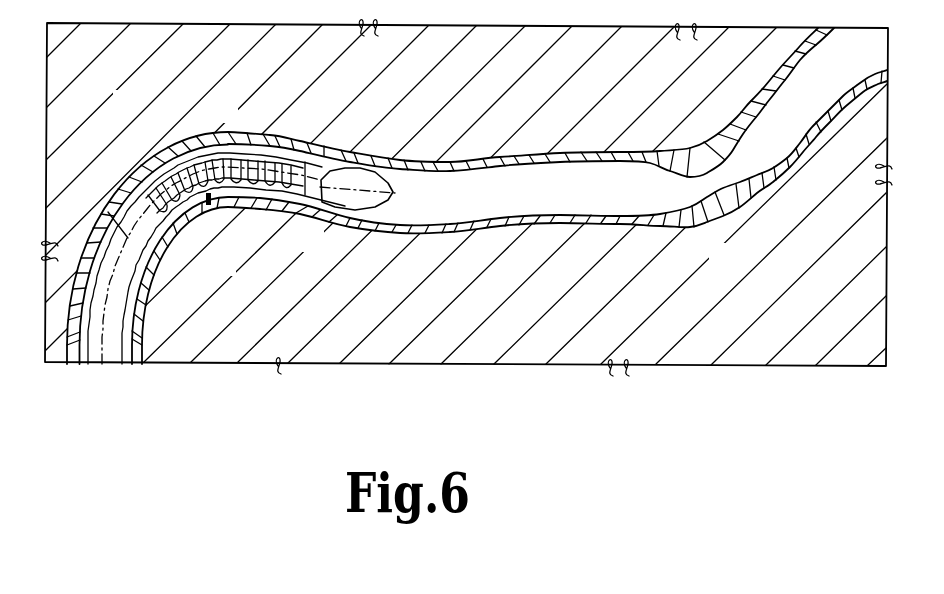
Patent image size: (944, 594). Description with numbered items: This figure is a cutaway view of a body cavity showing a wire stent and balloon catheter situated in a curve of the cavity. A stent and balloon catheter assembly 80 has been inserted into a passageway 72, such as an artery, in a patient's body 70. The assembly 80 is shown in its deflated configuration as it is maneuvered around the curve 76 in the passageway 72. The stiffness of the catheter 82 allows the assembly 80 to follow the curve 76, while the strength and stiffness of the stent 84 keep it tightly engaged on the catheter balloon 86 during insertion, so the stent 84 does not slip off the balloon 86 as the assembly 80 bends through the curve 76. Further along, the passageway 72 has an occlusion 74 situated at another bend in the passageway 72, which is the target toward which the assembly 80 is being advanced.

The patient's body 70 is at (571, 47).
The passageway 72 is at (313, 140).
The occlusion 74 is at (710, 221).
The curve 76 is at (141, 149).
The stent and balloon catheter assembly 80 is at (210, 206).
The catheter 82 is at (114, 353).
The stent 84 is at (226, 156).
The catheter balloon 86 is at (322, 212).